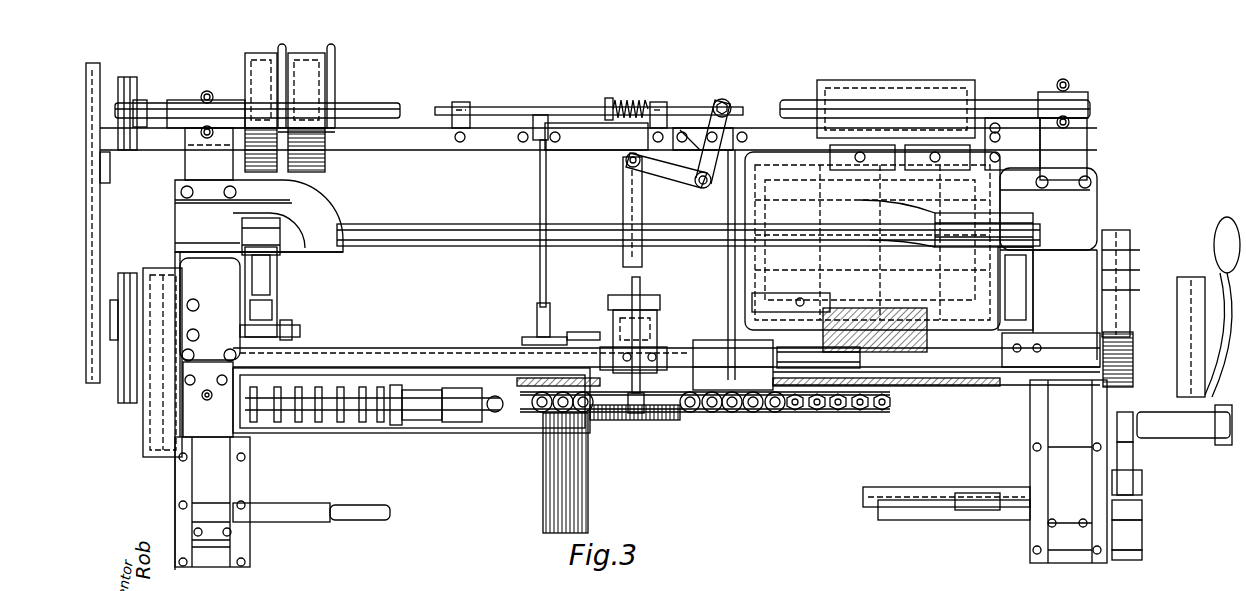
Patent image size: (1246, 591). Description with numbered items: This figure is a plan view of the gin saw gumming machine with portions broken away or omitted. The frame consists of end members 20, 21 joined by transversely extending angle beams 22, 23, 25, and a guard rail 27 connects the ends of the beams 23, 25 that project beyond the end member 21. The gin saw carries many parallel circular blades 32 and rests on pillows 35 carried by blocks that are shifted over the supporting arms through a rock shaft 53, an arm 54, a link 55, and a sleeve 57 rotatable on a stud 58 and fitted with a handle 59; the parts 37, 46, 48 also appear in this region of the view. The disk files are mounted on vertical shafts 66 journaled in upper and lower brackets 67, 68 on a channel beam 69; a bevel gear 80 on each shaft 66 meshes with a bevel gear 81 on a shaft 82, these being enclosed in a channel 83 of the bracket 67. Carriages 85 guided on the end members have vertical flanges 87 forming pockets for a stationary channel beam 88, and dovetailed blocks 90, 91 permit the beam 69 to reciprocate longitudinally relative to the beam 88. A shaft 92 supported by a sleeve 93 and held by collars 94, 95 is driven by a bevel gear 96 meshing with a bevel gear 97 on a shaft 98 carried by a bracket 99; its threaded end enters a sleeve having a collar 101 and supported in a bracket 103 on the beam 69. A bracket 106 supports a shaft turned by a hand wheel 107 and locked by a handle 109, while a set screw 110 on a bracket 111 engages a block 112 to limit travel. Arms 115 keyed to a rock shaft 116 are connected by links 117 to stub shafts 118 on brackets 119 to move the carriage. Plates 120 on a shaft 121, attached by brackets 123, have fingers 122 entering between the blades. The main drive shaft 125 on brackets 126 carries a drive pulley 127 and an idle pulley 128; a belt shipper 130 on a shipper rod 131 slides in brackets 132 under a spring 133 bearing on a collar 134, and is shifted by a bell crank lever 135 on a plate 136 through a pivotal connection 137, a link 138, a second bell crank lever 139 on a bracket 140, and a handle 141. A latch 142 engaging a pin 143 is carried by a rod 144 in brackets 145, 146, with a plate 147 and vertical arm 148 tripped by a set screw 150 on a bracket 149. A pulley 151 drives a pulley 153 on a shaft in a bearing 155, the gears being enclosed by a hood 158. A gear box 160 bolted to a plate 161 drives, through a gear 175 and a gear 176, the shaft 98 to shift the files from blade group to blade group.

The end member 20 is at (1075, 150).
The end member 21 is at (190, 165).
The angle beam 22 is at (870, 500).
The angle beam 23 is at (595, 145).
The angle beam 25 is at (125, 395).
The guard rail 27 is at (97, 215).
The circular blade 32 is at (543, 530).
The pillow 35 is at (443, 583).
The base member 37 is at (390, 581).
The rod 46 is at (265, 520).
The collar 48 is at (1142, 508).
The rock shaft 53 is at (890, 510).
The arm 54 is at (1142, 535).
The link 55 is at (1142, 485).
The sleeve 57 is at (1135, 470).
The stud 58 is at (1190, 440).
The handle 59 is at (1222, 285).
The vertical shaft 66 is at (700, 412).
The upper bracket 67 is at (360, 370).
The lower bracket 68 is at (725, 412).
The channel beam 69 is at (520, 380).
The bevel gear 80 is at (495, 420).
The bevel gear 81 is at (485, 432).
The shaft 82 is at (455, 425).
The channel 83 is at (373, 423).
The carriage 85 is at (1130, 275).
The vertical flange 87 is at (1130, 290).
The channel beam 88 is at (733, 352).
The dovetailed block 90 is at (882, 412).
The dovetailed block 91 is at (860, 412).
The shaft 92 is at (838, 412).
The sleeve 93 is at (775, 412).
The collar 94 is at (790, 350).
The collar 95 is at (810, 350).
The bevel gear 96 is at (820, 412).
The bevel gear 97 is at (835, 315).
The shaft 98 is at (865, 310).
The bracket 99 is at (791, 301).
The collar 101 is at (960, 370).
The bracket 103 is at (985, 370).
The bracket 106 is at (1128, 440).
The hand wheel 107 is at (1130, 330).
The handle 109 is at (1190, 277).
The set screw 110 is at (1060, 360).
The bracket 111 is at (1072, 330).
The block 112 is at (1025, 370).
The arm 115 is at (280, 283).
The rock shaft 116 is at (362, 230).
The link 117 is at (278, 297).
The stub shaft 118 is at (292, 333).
The bracket 119 is at (280, 312).
The plate 120 is at (615, 330).
The shaft 121 is at (678, 355).
The finger 122 is at (645, 420).
The bracket 123 is at (640, 330).
The main drive shaft 125 is at (360, 105).
The bracket 126 is at (194, 100).
The drive pulley 127 is at (297, 65).
The idle pulley 128 is at (250, 65).
The belt shipper 130 is at (333, 70).
The shipper rod 131 is at (478, 107).
The bracket 132 is at (460, 102).
The spring 133 is at (630, 100).
The collar 134 is at (610, 98).
The bell crank lever 135 is at (690, 175).
The plate 136 is at (700, 130).
The pivotal connection 137 is at (731, 105).
The link 138 is at (625, 200).
The bell crank lever 139 is at (650, 295).
The bracket 140 is at (635, 250).
The handle 141 is at (640, 425).
The latch 142 is at (533, 130).
The pin 143 is at (540, 115).
The rod 144 is at (540, 186).
The bracket 145 is at (548, 120).
The bracket 146 is at (537, 318).
The plate 147 is at (537, 310).
The vertical arm 148 is at (537, 258).
The bracket 149 is at (583, 330).
The set screw 150 is at (575, 330).
The pulley 151 is at (137, 80).
The pulley 153 is at (139, 362).
The bearing 155 is at (666, 355).
The hood 158 is at (155, 455).
The gear box 160 is at (810, 210).
The plate 161 is at (725, 205).
The gear 175 is at (940, 385).
The gear 176 is at (850, 300).